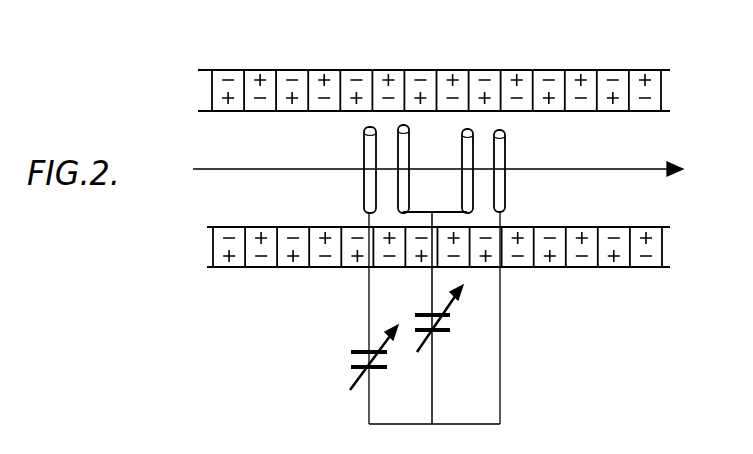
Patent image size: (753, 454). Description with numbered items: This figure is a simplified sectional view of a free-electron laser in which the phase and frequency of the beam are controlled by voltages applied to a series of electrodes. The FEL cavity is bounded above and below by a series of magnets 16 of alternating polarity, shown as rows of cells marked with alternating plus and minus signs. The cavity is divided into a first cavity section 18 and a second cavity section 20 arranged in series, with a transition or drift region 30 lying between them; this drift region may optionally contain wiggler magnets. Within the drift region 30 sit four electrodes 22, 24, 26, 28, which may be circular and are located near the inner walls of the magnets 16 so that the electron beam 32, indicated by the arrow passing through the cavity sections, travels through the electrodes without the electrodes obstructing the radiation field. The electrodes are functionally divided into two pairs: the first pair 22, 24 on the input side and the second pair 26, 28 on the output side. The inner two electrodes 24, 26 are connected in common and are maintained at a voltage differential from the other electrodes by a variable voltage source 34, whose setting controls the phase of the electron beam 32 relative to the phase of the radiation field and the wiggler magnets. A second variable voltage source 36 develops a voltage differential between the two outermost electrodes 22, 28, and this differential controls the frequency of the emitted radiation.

The magnets 16 is at (662, 247).
The first cavity section 18 is at (213, 56).
The second cavity section 20 is at (668, 56).
The electrode 22 is at (363, 148).
The electrode 24 is at (409, 137).
The electrode 26 is at (463, 135).
The electrode 28 is at (505, 148).
The transition or drift region 30 is at (530, 57).
The electron beam 32 is at (628, 170).
The variable voltage source 34 is at (456, 330).
The second variable voltage source 36 is at (350, 378).